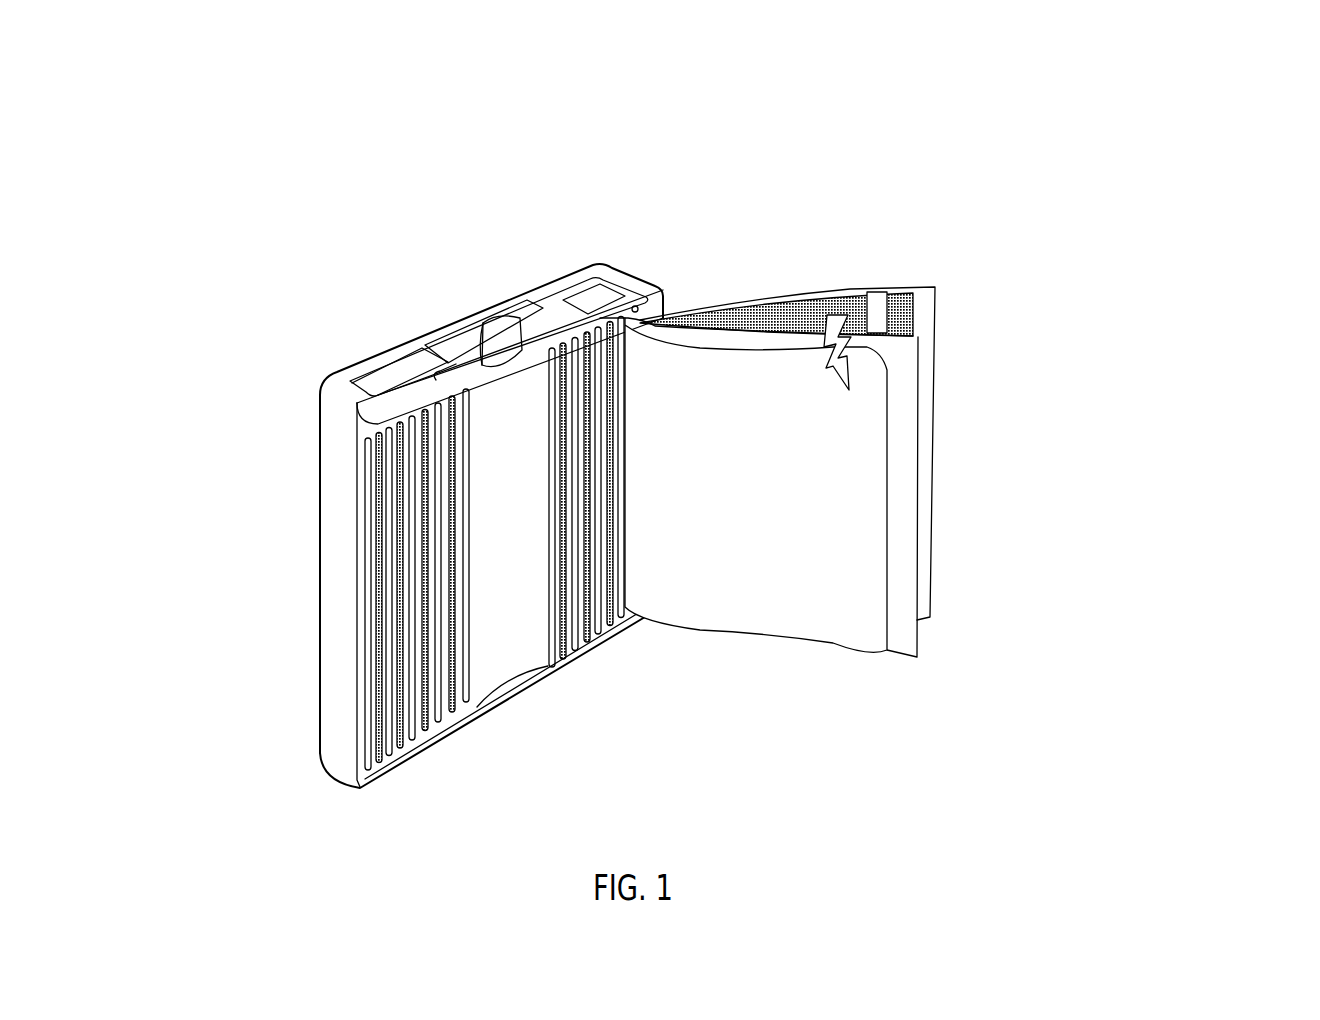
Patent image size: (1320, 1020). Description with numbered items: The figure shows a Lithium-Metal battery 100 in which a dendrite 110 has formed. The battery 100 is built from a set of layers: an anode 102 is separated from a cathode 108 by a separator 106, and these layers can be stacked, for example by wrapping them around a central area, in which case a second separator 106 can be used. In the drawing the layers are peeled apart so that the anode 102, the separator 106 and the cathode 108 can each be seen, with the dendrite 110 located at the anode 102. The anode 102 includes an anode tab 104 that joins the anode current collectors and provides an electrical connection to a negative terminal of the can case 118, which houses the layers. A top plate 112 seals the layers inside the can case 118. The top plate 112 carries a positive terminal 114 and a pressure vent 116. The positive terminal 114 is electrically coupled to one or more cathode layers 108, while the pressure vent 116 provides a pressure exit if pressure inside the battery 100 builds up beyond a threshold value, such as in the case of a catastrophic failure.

The Lithium-Metal battery 100 is at (1191, 113).
The anode 102 is at (772, 302).
The anode tab 104 is at (875, 318).
The separator 106 is at (925, 310).
The cathode 108 is at (710, 605).
The dendrite 110 is at (853, 300).
The top plate 112 is at (617, 283).
The positive terminal 114 is at (497, 325).
The pressure vent 116 is at (373, 383).
The can case 118 is at (337, 740).